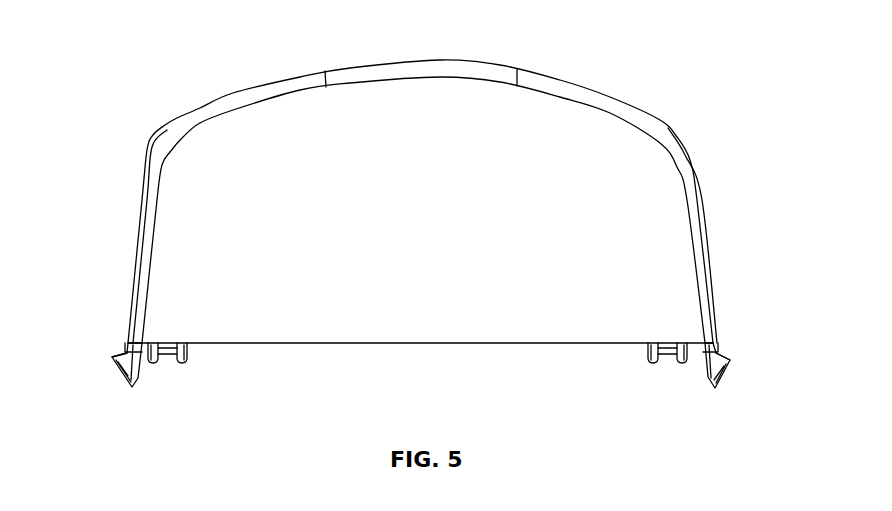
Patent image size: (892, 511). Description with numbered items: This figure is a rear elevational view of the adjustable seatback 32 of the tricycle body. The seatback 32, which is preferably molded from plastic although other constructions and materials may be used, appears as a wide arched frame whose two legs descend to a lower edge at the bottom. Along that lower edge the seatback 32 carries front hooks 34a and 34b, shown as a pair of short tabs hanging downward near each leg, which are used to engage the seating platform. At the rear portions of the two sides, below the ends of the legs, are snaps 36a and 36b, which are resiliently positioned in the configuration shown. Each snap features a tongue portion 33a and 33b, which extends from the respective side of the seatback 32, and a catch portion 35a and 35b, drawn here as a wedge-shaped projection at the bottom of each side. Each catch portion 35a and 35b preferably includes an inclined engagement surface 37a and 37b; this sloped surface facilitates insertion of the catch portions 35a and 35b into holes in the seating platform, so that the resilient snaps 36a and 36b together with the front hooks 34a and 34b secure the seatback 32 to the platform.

The adjustable seatback 32 is at (470, 72).
The tongue portion 33a is at (716, 350).
The tongue portion 33b is at (125, 350).
The front hook 34a is at (655, 363).
The front hook 34b is at (182, 365).
The catch portion 35a is at (704, 376).
The catch portion 35b is at (128, 387).
The snap 36a is at (721, 368).
The snap 36b is at (116, 374).
The inclined engagement surface 37a is at (723, 383).
The inclined engagement surface 37b is at (113, 362).